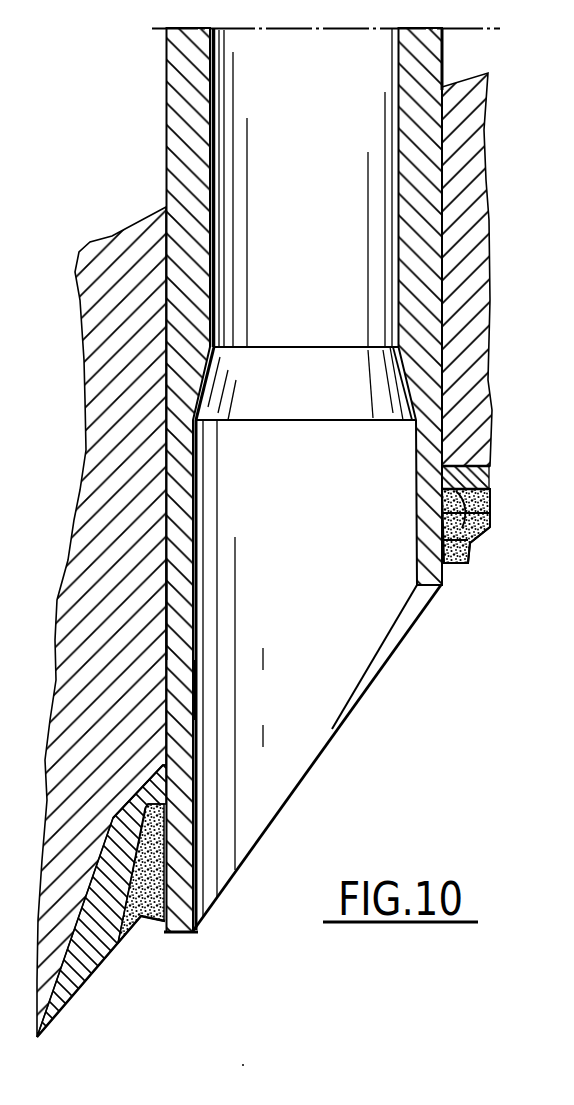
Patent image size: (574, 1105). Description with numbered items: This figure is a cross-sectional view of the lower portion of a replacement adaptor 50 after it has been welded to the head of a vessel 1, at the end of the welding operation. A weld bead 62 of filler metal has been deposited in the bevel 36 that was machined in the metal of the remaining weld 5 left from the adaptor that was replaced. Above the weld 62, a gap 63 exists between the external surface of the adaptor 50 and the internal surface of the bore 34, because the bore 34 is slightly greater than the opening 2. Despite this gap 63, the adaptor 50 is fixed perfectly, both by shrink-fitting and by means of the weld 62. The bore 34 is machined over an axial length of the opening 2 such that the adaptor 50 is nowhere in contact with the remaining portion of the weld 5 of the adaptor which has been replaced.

The body 1 is at (107, 283).
The opening 2 is at (168, 238).
The weld 5 is at (440, 484).
The bore 34 is at (162, 694).
The bevel 36 is at (448, 568).
The replacement adaptor 50 is at (428, 382).
The weld bead 62 is at (183, 934).
The gap 63 is at (163, 627).